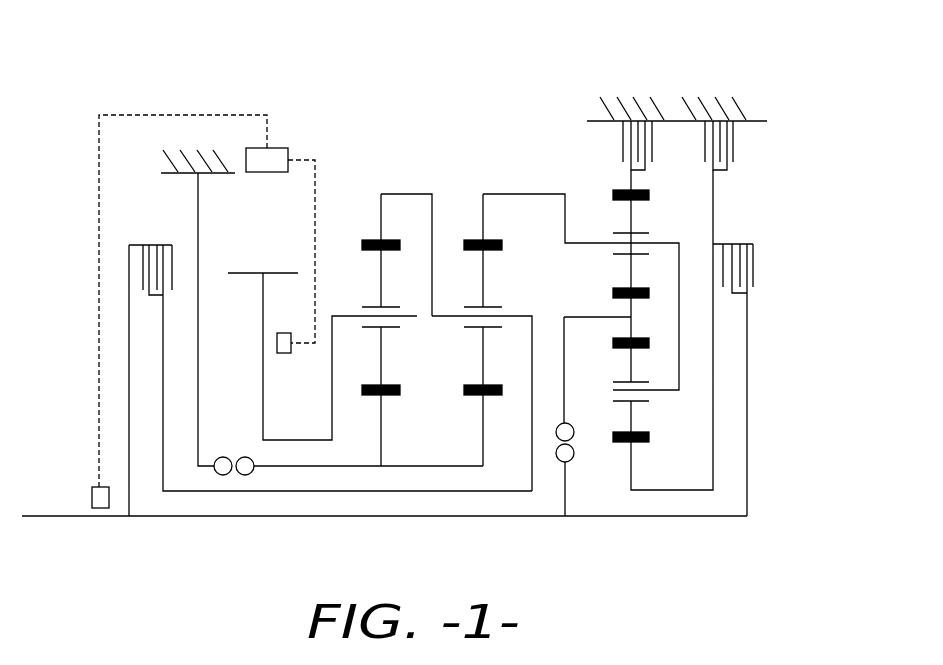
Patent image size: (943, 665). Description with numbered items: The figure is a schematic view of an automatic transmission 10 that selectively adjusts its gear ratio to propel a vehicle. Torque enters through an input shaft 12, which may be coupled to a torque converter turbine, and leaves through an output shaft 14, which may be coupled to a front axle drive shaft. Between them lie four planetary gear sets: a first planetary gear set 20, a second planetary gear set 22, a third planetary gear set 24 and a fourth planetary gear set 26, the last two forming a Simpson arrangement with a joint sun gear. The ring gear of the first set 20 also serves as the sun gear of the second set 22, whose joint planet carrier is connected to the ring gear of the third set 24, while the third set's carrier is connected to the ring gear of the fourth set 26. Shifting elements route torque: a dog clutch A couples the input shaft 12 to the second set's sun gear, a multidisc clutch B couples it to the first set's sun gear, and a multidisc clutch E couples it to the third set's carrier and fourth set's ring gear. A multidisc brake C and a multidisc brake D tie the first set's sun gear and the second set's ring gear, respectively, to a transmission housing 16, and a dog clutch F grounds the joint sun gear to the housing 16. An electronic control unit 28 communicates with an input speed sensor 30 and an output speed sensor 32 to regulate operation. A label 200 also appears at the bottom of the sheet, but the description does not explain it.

The automatic transmission 10 is at (148, 73).
The input shaft 12 is at (43, 516).
The output shaft 14 is at (264, 403).
The transmission housing 16 is at (218, 173).
The first planetary gear set 20 is at (653, 413).
The second planetary gear set 22 is at (667, 227).
The third planetary gear set 24 is at (457, 288).
The fourth planetary gear set 26 is at (400, 342).
The electronic control unit 28 is at (280, 148).
The input speed sensor 30 is at (92, 500).
The output speed sensor 32 is at (280, 354).
The method 200 is at (110, 664).
The dog clutch A is at (573, 455).
The multidisc clutch B is at (733, 243).
The multidisc brake C is at (733, 157).
The multidisc brake D is at (623, 157).
The multidisc clutch E is at (160, 245).
The dog clutch F is at (220, 475).